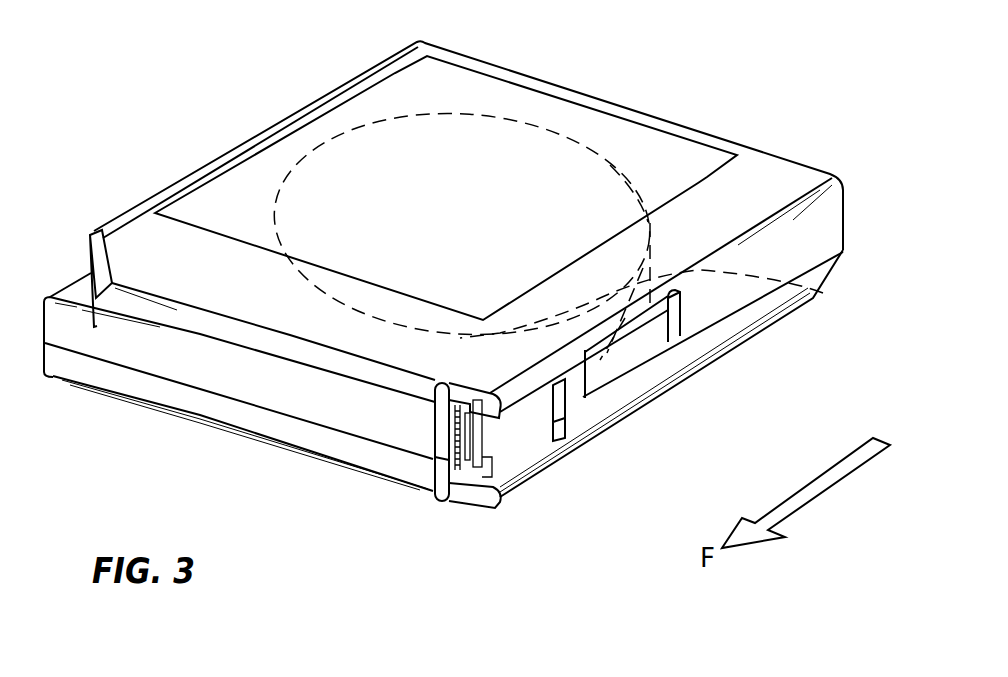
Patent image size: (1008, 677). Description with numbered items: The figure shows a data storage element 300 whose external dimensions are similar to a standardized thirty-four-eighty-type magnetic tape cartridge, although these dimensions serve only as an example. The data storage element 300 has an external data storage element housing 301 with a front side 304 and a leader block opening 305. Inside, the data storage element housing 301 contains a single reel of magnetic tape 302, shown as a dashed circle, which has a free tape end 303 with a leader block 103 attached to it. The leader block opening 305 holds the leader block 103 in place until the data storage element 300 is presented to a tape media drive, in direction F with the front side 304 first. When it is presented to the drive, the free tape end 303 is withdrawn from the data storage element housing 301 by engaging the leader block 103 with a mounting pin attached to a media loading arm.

The data storage element 300 is at (700, 385).
The data storage element housing 301 is at (773, 302).
The magnetic tape 302 is at (290, 182).
The free tape end 303 is at (823, 293).
The front side 304 is at (413, 427).
The leader block opening 305 is at (477, 493).
The leader block 103 is at (527, 430).